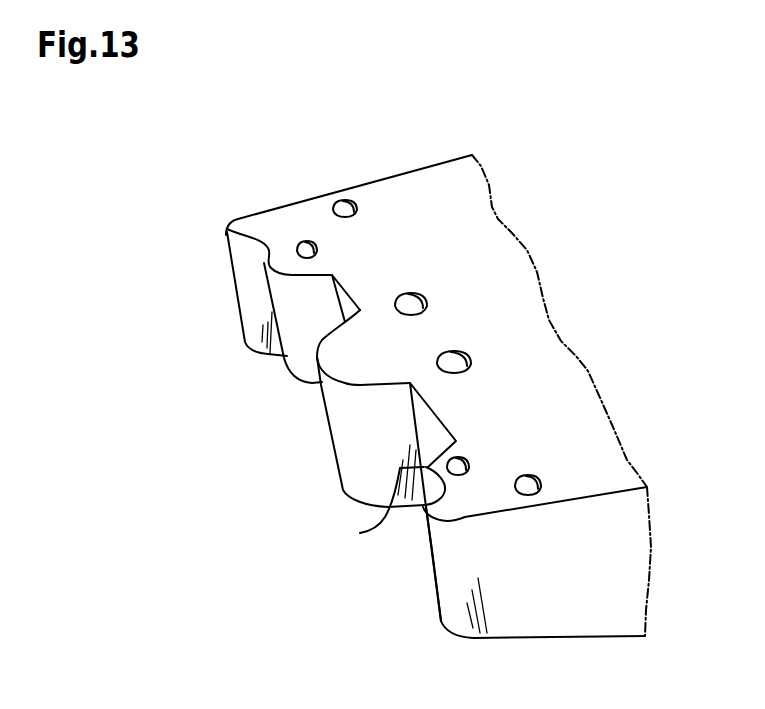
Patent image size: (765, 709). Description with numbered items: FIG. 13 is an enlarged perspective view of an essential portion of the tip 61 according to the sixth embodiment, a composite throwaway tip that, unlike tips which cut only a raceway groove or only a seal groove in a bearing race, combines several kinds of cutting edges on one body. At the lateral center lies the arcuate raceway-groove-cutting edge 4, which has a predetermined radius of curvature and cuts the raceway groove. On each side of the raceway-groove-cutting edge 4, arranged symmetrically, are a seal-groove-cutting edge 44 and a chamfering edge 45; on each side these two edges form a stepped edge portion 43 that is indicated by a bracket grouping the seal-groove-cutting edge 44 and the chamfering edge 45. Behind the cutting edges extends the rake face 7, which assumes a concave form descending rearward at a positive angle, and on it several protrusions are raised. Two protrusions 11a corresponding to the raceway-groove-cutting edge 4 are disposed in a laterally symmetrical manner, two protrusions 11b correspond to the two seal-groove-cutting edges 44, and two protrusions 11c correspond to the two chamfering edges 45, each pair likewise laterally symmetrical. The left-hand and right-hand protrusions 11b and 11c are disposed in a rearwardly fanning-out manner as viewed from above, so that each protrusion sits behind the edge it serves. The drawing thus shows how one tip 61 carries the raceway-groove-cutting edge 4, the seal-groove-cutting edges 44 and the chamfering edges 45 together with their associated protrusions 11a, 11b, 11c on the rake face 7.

The tip 61 is at (233, 169).
The rake face 7 is at (538, 330).
The raceway-groove-cutting edge 4 is at (299, 350).
The engaging portion 43 is at (133, 252).
The seal-groove-cutting edge 44 is at (264, 263).
The chamfering edge 45 is at (226, 229).
The protrusion 11a is at (453, 350).
The protrusion 11b is at (307, 240).
The protrusion 11c is at (345, 200).